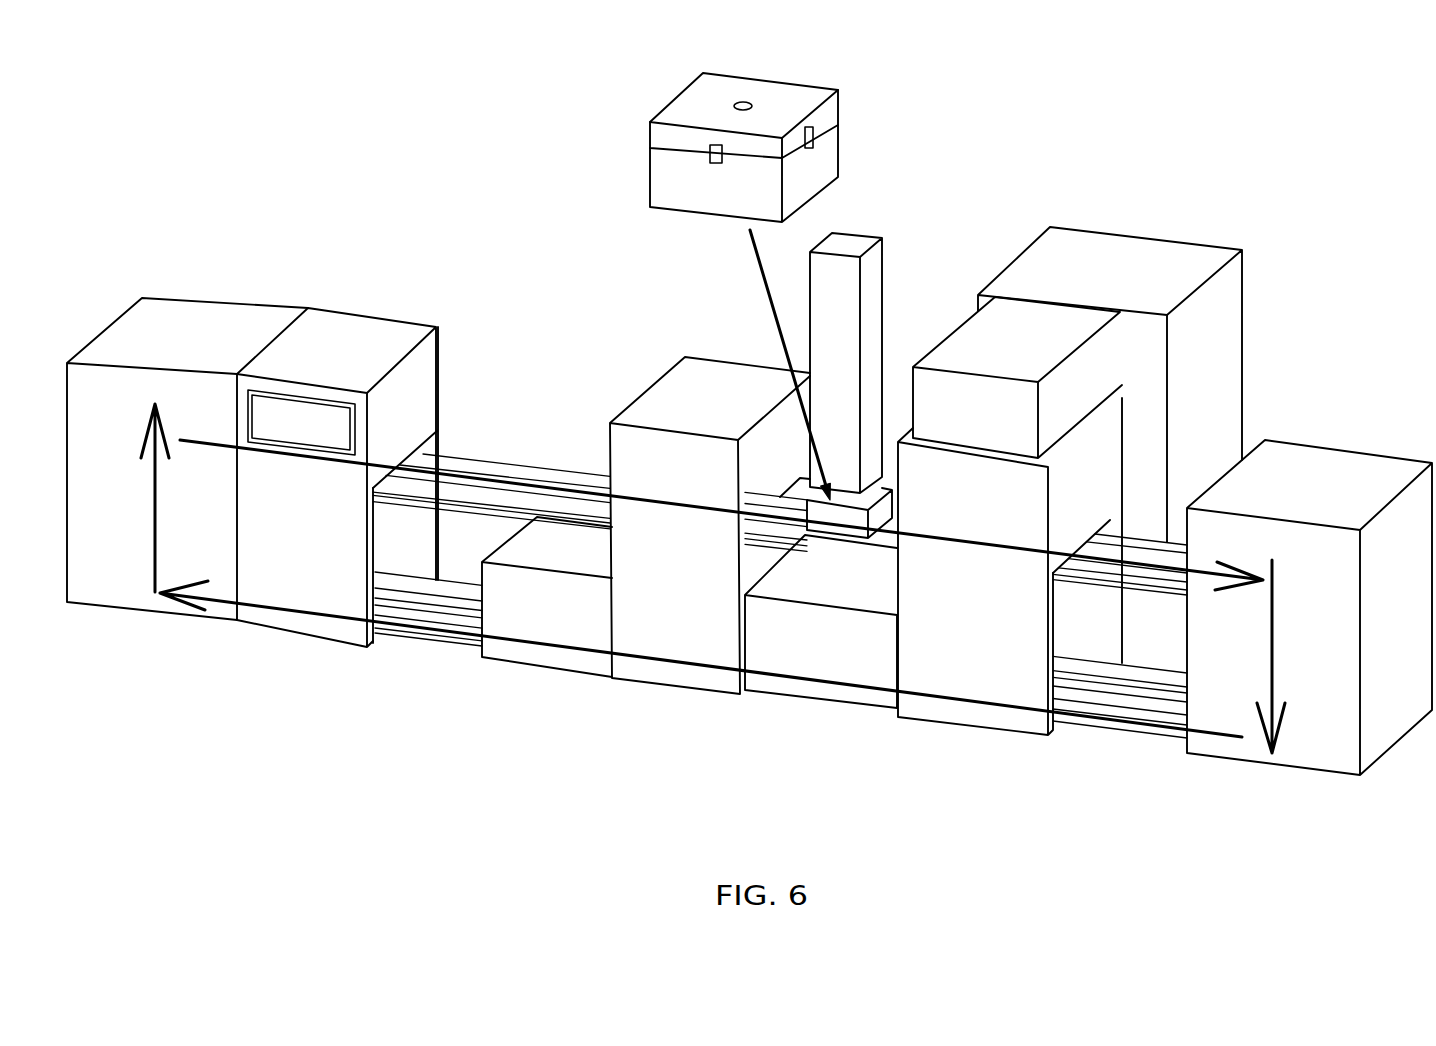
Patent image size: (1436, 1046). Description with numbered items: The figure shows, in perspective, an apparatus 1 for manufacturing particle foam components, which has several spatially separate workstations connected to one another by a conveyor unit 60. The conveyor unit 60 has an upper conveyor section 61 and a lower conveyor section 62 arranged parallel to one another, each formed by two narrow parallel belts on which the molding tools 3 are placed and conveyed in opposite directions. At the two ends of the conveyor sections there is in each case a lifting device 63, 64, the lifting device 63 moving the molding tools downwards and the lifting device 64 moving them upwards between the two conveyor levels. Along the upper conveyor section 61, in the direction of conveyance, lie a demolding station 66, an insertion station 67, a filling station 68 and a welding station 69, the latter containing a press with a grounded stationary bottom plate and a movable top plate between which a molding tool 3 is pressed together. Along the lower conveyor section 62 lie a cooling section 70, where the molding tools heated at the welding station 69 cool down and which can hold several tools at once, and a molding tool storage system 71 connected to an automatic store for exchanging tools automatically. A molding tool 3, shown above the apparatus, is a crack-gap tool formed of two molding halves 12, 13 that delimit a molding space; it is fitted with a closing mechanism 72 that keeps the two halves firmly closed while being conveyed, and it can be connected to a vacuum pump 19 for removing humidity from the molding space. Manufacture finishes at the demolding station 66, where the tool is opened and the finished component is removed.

The apparatus 1 is at (1262, 150).
The molding tool 3 is at (790, 85).
The molding half 12 is at (665, 114).
The molding half 13 is at (833, 163).
The closing mechanism 72 is at (818, 133).
The vacuum pump 19 is at (1158, 252).
The conveyor unit 60 is at (1155, 757).
The upper conveyor section 61 is at (490, 462).
The lower conveyor section 62 is at (408, 615).
The lifting device 63 is at (1385, 467).
The lifting device 64 is at (175, 312).
The demolding station 66 is at (345, 325).
The insertion station 67 is at (722, 372).
The filling station 68 is at (870, 278).
The welding station 69 is at (1045, 313).
The cooling section 70 is at (822, 693).
The molding tool storage system 71 is at (535, 633).